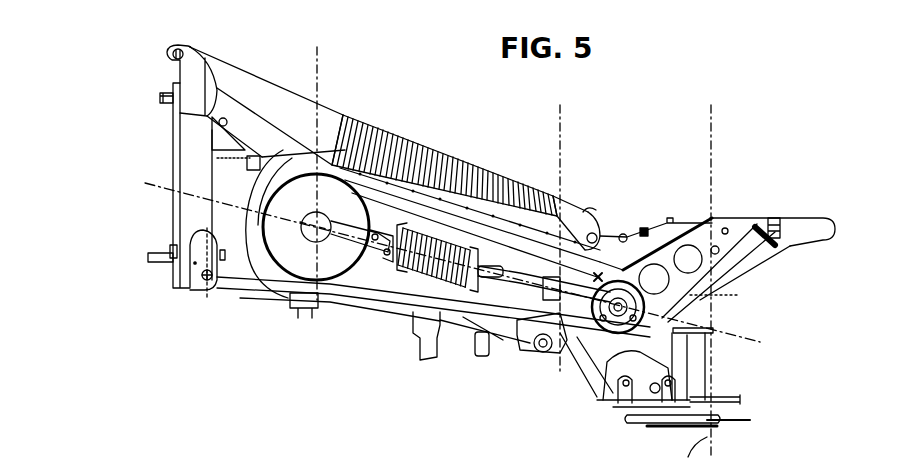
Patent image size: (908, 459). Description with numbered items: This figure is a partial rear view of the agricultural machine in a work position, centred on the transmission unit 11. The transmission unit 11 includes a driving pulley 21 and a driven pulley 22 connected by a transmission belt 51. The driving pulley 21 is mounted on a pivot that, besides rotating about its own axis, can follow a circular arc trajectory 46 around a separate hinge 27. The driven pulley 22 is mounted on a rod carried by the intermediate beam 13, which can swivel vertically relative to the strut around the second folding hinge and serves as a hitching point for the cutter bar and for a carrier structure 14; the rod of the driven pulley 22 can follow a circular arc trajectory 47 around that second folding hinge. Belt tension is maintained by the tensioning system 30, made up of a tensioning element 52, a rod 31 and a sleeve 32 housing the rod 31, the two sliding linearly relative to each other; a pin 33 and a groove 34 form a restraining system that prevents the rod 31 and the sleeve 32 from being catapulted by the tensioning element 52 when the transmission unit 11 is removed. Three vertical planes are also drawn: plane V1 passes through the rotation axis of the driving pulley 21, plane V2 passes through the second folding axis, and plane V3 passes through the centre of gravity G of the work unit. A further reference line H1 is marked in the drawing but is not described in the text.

The transmission unit 11 is at (258, 280).
The intermediate beam 13 is at (797, 217).
The carrier structure 14 is at (750, 267).
The driving pulley 21 is at (323, 148).
The driven pulley 22 is at (608, 255).
The hinge 27 is at (297, 308).
The transmission element tensioning system 30 is at (283, 275).
The rod 31 is at (355, 262).
The sleeve 32 is at (512, 282).
The pin 33 is at (487, 282).
The groove 34 is at (497, 284).
The circular arc trajectory 46 is at (362, 262).
The circular arc trajectory 47 is at (637, 300).
The transmission belt 51 is at (470, 220).
The tensioning element 52 is at (414, 278).
The centre of gravity G is at (713, 298).
The horizontal axis H1 is at (150, 187).
The vertical plane V1 is at (320, 62).
The vertical plane V2 is at (562, 153).
The vertical plane V3 is at (712, 139).